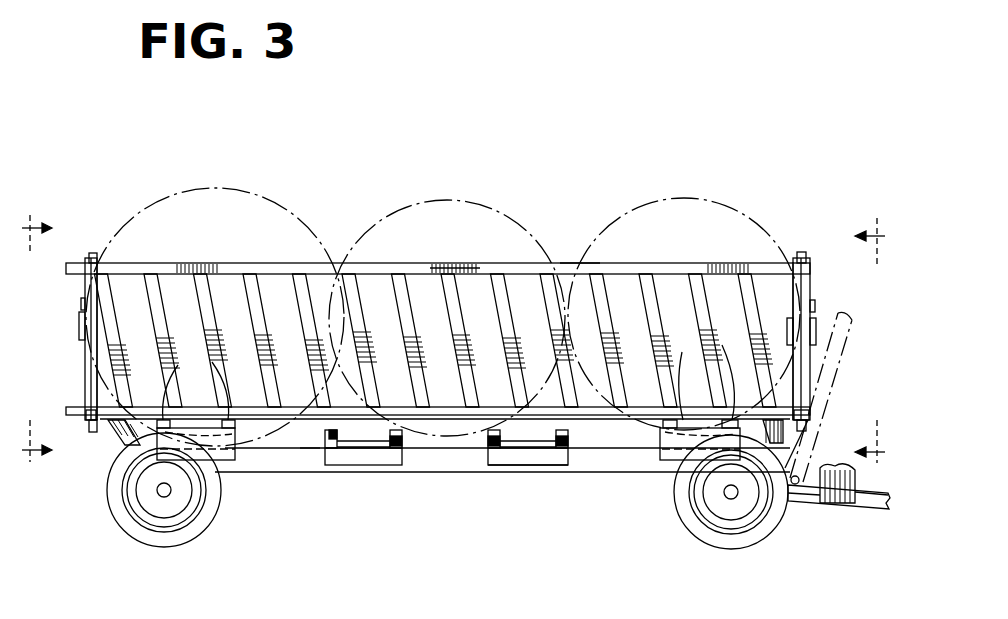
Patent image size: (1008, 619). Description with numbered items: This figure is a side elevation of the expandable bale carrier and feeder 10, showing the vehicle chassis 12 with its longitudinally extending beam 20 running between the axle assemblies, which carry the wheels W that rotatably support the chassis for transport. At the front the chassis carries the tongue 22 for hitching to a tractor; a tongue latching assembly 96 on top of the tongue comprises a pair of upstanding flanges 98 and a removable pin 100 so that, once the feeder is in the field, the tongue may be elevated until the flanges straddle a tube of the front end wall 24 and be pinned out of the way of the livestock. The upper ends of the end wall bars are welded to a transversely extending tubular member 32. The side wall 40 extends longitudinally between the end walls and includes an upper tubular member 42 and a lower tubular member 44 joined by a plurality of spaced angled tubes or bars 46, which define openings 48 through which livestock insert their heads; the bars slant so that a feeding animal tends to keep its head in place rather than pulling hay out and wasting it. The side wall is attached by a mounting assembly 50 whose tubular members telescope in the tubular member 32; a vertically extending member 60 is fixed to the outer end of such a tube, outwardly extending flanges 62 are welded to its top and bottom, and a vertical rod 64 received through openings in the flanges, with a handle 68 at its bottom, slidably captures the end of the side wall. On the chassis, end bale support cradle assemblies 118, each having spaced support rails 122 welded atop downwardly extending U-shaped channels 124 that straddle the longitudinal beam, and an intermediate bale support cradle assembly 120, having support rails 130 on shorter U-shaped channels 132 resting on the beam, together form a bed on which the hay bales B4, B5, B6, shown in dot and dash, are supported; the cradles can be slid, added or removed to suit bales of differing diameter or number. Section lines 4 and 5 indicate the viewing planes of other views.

The hay bale B4 is at (250, 205).
The hay bale B5 is at (490, 215).
The hay bale B6 is at (720, 228).
The section line 4- 4 is at (37, 340).
The section line 5- 5 is at (875, 344).
The expandable bale carrier and feeder 10 is at (572, 258).
The vehicle chassis 12 is at (448, 478).
The longitudinally extending beam 20 is at (432, 460).
The tongue 22 is at (840, 508).
The front end wall 24 is at (845, 352).
The transversely extending tubular member 32 is at (78, 332).
The side wall 40 is at (328, 262).
The upper tubular member 42 is at (450, 264).
The lower tubular member 44 is at (305, 418).
The angled tubes or bars 46 is at (262, 324).
The opening 48 is at (388, 344).
The mounting assembly 50 is at (72, 352).
The vertically extending member 60 is at (84, 280).
The outwardly extending flange 62 is at (97, 255).
The vertical rod 64 is at (90, 300).
The handle 68 is at (88, 410).
The tongue latching assembly 96 is at (836, 456).
The upstanding flange 98 is at (865, 500).
The removable pin 100 is at (825, 504).
The end bale support cradle assembly 118 is at (232, 478).
The intermediate bale support cradle assembly 120 is at (372, 465).
The support rail 122 is at (718, 346).
The U-shaped channel 124 is at (236, 438).
The support rail 130 is at (340, 428).
The U-shaped channel 132 is at (532, 470).
The wheel W is at (108, 482).